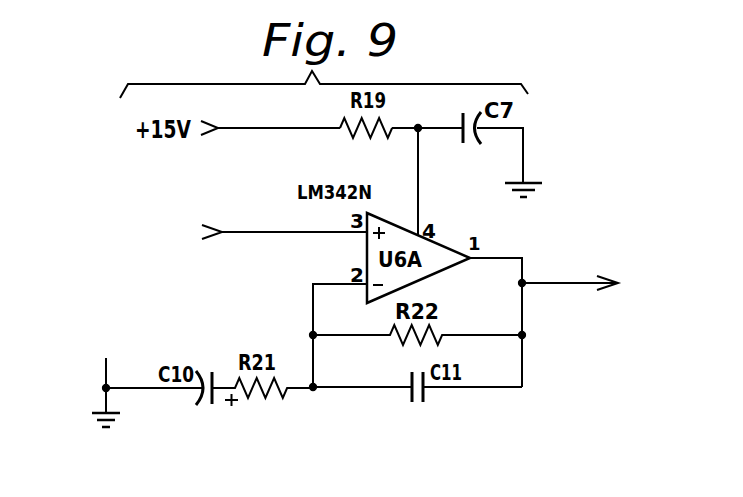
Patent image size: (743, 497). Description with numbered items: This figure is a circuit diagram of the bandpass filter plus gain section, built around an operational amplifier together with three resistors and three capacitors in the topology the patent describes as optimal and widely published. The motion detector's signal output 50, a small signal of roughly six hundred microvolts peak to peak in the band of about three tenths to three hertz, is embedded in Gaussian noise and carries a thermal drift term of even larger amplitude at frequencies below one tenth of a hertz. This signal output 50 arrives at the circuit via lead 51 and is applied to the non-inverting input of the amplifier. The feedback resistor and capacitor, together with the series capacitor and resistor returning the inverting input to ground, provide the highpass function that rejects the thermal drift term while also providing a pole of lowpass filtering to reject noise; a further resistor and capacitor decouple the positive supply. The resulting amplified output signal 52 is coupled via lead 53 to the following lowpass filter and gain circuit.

The signal output 50 is at (167, 233).
The lead 51 is at (270, 236).
The output signal 52 is at (657, 282).
The lead 53 is at (554, 288).